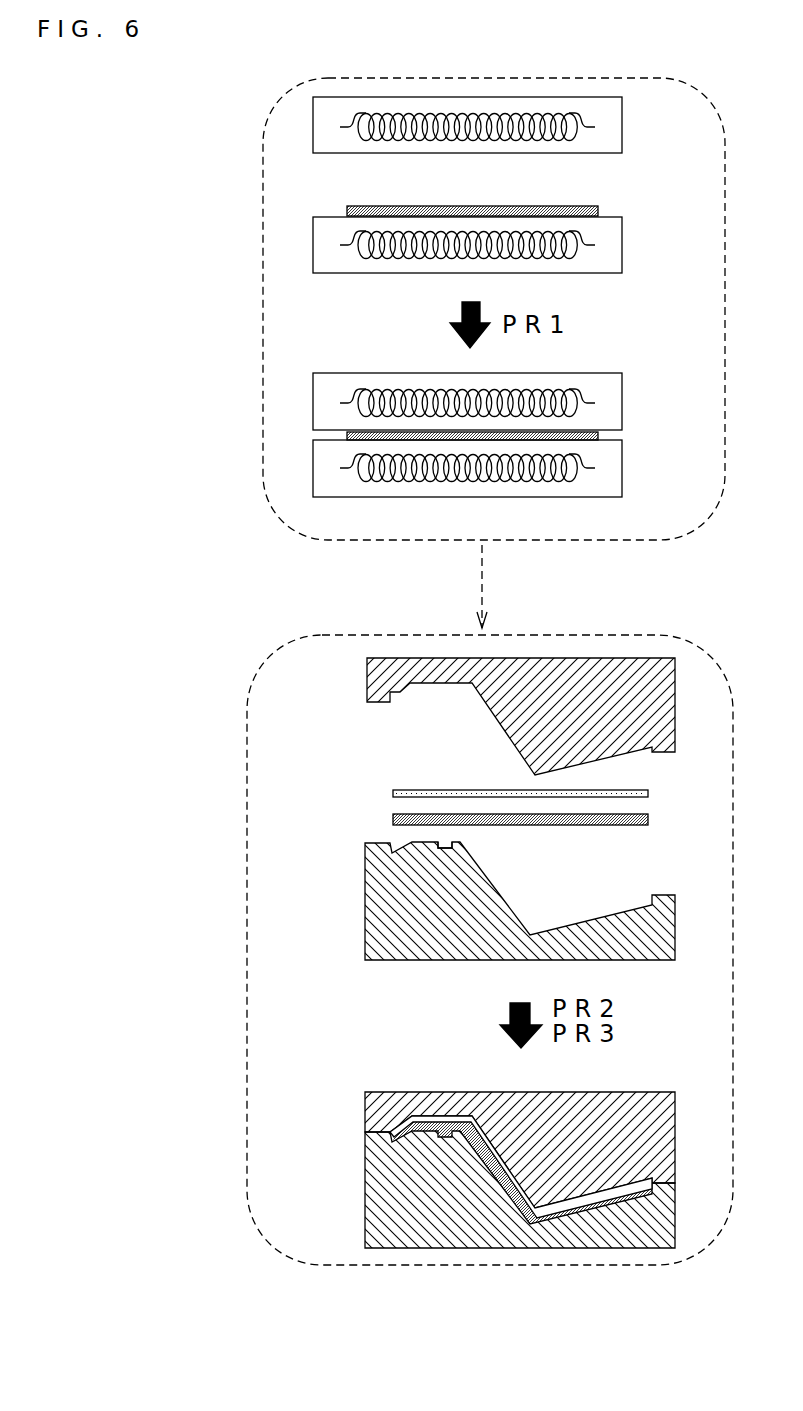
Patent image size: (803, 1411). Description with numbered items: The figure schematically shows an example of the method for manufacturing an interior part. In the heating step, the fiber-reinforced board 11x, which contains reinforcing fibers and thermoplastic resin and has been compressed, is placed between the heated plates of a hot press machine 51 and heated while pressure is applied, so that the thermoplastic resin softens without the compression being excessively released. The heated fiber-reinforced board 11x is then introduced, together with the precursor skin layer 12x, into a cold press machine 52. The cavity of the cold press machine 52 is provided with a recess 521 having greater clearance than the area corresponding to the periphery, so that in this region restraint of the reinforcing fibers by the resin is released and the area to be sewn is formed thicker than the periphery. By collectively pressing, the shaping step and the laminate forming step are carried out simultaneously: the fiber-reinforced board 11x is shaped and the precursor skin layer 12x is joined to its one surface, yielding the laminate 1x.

The fiber-reinforced board 11x is at (570, 208).
The hot press machine 51 is at (614, 245).
The precursor skin layer 12x is at (408, 790).
The cold press machine 52 is at (365, 912).
The recess 521 is at (449, 842).
The laminate 1x is at (422, 1113).